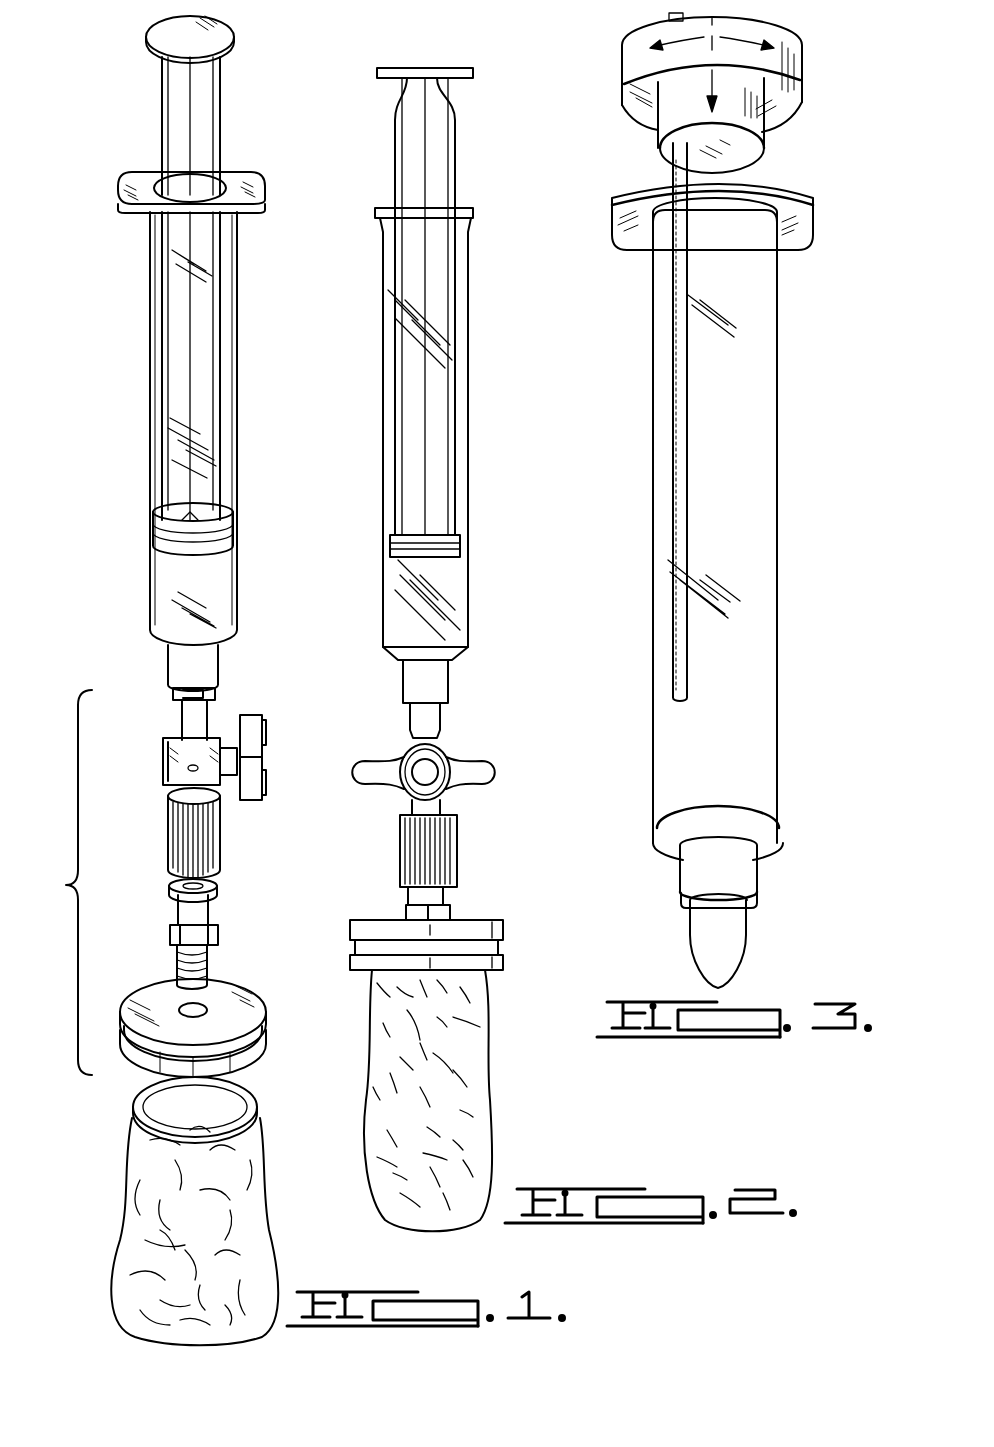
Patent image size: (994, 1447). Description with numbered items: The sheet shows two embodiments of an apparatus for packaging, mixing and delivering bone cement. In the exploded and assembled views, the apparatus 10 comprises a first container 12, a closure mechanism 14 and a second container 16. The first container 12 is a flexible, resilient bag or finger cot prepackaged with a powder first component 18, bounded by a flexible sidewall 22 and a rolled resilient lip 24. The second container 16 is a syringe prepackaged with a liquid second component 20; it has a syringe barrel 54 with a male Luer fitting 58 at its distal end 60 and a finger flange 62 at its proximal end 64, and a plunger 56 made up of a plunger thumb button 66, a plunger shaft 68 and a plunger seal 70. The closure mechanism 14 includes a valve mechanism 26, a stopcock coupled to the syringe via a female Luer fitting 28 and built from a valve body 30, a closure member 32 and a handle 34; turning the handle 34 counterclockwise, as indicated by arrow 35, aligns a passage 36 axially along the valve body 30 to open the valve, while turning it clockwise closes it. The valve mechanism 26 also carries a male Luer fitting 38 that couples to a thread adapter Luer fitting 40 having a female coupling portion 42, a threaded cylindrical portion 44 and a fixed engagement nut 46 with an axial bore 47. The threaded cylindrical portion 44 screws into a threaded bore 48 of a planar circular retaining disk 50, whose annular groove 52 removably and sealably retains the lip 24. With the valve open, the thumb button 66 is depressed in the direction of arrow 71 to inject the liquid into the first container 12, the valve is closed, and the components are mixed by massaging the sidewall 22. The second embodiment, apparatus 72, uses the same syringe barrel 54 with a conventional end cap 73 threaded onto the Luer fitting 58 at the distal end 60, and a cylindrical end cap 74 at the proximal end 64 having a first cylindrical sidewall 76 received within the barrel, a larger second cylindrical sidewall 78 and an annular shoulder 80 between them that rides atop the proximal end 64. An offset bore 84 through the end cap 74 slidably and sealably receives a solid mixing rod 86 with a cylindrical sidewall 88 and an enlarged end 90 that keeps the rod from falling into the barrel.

In FIG. 1, the apparatus 10 is at (92, 368).
In FIG. 2, the apparatus 10 is at (495, 268).
In FIG. 1, the first container 12 is at (145, 1205).
In FIG. 2, the first container 12 is at (475, 1018).
In FIG. 1, the closure mechanism 14 is at (58, 882).
In FIG. 2, the closure mechanism 14 is at (478, 725).
In FIG. 1, the second container 16 is at (150, 422).
In FIG. 2, the second container 16 is at (468, 395).
In FIG. 1, the first component 18 is at (160, 1270).
In FIG. 2, the first component 18 is at (455, 1162).
In FIG. 1, the second component 20 is at (158, 567).
In FIG. 2, the second component 20 is at (458, 620).
In FIG. 1, the sidewall 22 is at (258, 1182).
In FIG. 2, the sidewall 22 is at (485, 1057).
In FIG. 1, the lip 24 is at (255, 1108).
In FIG. 1, the valve mechanism 26 is at (160, 760).
In FIG. 1, the female Luer fitting 28 is at (215, 688).
In FIG. 1, the valve body 30 is at (175, 787).
In FIG. 1, the closure member 32 is at (178, 740).
In FIG. 1, the handle 34 is at (250, 718).
In FIG. 2, the handle 34 is at (485, 770).
In FIG. 2, the arrow 35 is at (388, 740).
In FIG. 1, the passage 36 is at (198, 772).
In FIG. 1, the male Luer fitting 38 is at (200, 857).
In FIG. 2, the male Luer fitting 38 is at (445, 845).
In FIG. 1, the Luer fitting 40 is at (200, 915).
In FIG. 1, the female coupling portion 42 is at (205, 887).
In FIG. 1, the threaded cylindrical portion 44 is at (178, 965).
In FIG. 1, the engagement nut 46 is at (213, 940).
In FIG. 1, the axial bore 47 is at (190, 885).
In FIG. 1, the threaded bore 48 is at (190, 1008).
In FIG. 1, the retaining disk 50 is at (240, 1020).
In FIG. 2, the retaining disk 50 is at (470, 918).
In FIG. 1, the annular groove 52 is at (250, 1055).
In FIG. 2, the annular groove 52 is at (505, 950).
In FIG. 1, the syringe barrel 54 is at (238, 425).
In FIG. 2, the syringe barrel 54 is at (462, 460).
In FIG. 3, the syringe barrel 54 is at (760, 475).
In FIG. 1, the plunger 56 is at (160, 90).
In FIG. 2, the plunger 56 is at (453, 180).
In FIG. 1, the male Luer fitting 58 is at (172, 660).
In FIG. 2, the male Luer fitting 58 is at (433, 690).
In FIG. 3, the male Luer fitting 58 is at (745, 878).
In FIG. 1, the distal end 60 is at (175, 688).
In FIG. 3, the distal end 60 is at (752, 910).
In FIG. 1, the finger flange 62 is at (125, 188).
In FIG. 3, the finger flange 62 is at (795, 240).
In FIG. 1, the proximal end 64 is at (158, 172).
In FIG. 2, the proximal end 64 is at (424, 213).
In FIG. 3, the proximal end 64 is at (800, 190).
In FIG. 1, the plunger thumb button 66 is at (150, 38).
In FIG. 2, the plunger thumb button 66 is at (455, 68).
In FIG. 1, the plunger shaft 68 is at (178, 293).
In FIG. 2, the plunger shaft 68 is at (442, 488).
In FIG. 1, the plunger seal 70 is at (165, 535).
In FIG. 2, the plunger seal 70 is at (462, 545).
In FIG. 2, the arrow 71 is at (468, 95).
In FIG. 3, the apparatus 72 is at (824, 74).
In FIG. 3, the end cap 73 is at (730, 948).
In FIG. 3, the cylindrical end cap 74 is at (790, 32).
In FIG. 3, the first cylindrical sidewall 76 is at (760, 122).
In FIG. 3, the second cylindrical sidewall 78 is at (800, 95).
In FIG. 3, the annular shoulder 80 is at (640, 118).
In FIG. 3, the bore 84 is at (665, 150).
In FIG. 3, the mixing rod 86 is at (680, 335).
In FIG. 3, the cylindrical sidewall 88 is at (672, 400).
In FIG. 3, the enlarged end 90 is at (670, 18).